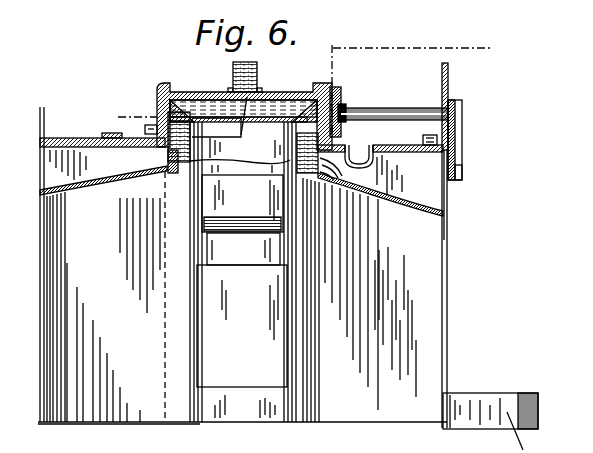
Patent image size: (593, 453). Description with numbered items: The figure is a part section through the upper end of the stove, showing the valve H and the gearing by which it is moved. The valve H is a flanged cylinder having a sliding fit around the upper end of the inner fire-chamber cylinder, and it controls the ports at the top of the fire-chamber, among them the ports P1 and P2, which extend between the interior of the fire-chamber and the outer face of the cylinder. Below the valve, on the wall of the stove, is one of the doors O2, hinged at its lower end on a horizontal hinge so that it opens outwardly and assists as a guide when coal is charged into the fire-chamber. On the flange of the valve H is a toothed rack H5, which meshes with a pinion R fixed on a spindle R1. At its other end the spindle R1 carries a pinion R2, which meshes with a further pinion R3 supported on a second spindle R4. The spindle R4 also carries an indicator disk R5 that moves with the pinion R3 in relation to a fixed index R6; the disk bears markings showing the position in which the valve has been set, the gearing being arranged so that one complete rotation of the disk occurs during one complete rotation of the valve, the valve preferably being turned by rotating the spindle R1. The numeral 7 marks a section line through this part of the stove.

The valve H is at (157, 90).
The toothed rack H5 is at (182, 66).
The port P1 is at (223, 127).
The port P2 is at (304, 92).
The pinion R is at (338, 92).
The spindle R1 is at (398, 108).
The pinion R2 is at (462, 113).
The pinion R3 is at (462, 148).
The spindle R4 is at (447, 160).
The indicator disk R5 is at (460, 167).
The fixed index R6 is at (457, 100).
The doors O2 is at (243, 205).
The section line 7 is at (316, 244).